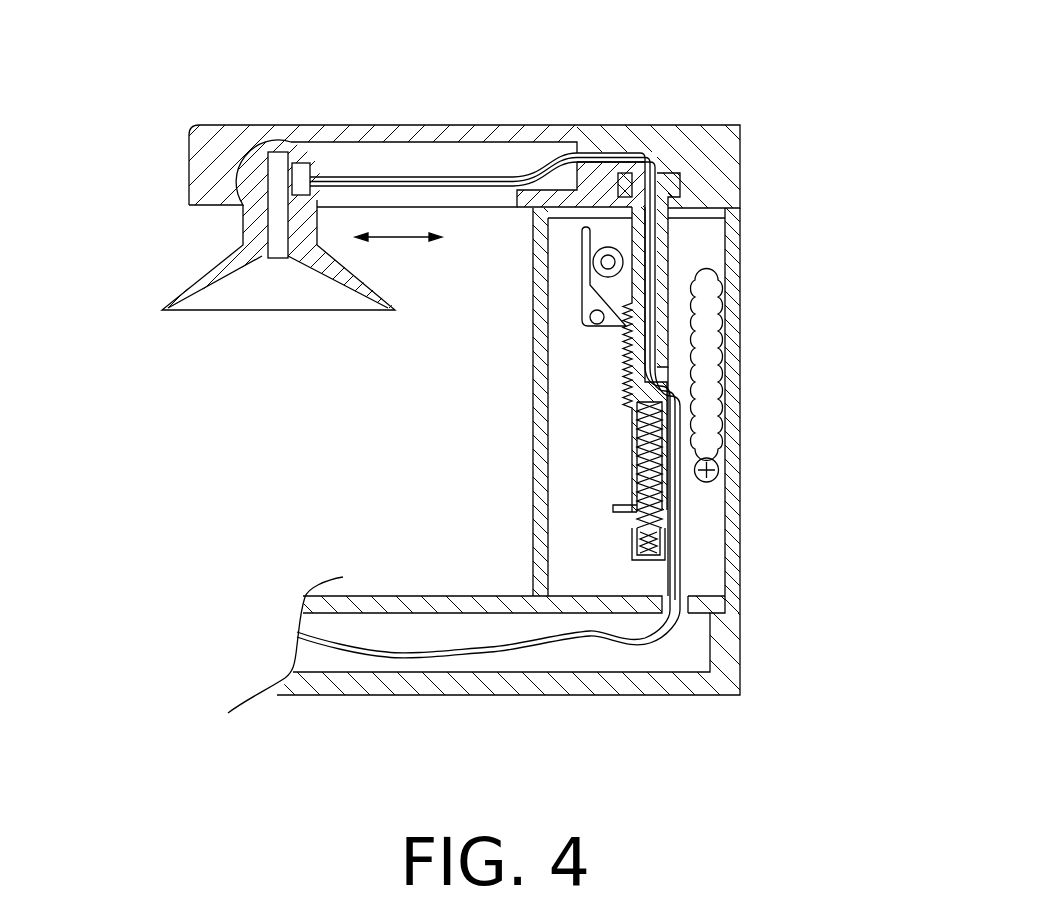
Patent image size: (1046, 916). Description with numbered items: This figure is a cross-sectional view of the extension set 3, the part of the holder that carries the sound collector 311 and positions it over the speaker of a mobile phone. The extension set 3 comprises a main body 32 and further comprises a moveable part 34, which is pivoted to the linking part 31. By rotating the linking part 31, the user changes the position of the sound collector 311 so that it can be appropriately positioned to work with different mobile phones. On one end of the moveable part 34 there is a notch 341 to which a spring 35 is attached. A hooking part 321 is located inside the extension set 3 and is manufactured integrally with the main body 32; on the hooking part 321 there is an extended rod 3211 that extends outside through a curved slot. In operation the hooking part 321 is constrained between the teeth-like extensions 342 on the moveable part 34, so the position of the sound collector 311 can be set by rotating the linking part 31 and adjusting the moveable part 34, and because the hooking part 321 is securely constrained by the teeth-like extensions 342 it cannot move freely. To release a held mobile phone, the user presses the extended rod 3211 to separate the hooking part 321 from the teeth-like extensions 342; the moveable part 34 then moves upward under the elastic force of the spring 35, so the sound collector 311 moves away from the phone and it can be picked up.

The extension set 3 is at (489, 360).
The linking part 31 is at (460, 128).
The sound collector 311 is at (260, 230).
The main body 32 is at (733, 478).
The hooking part 321 is at (583, 268).
The extended rod 3211 is at (583, 323).
The moveable part 34 is at (668, 242).
The notch 341 is at (667, 498).
The teeth-like extensions 342 is at (623, 393).
The spring 35 is at (647, 515).